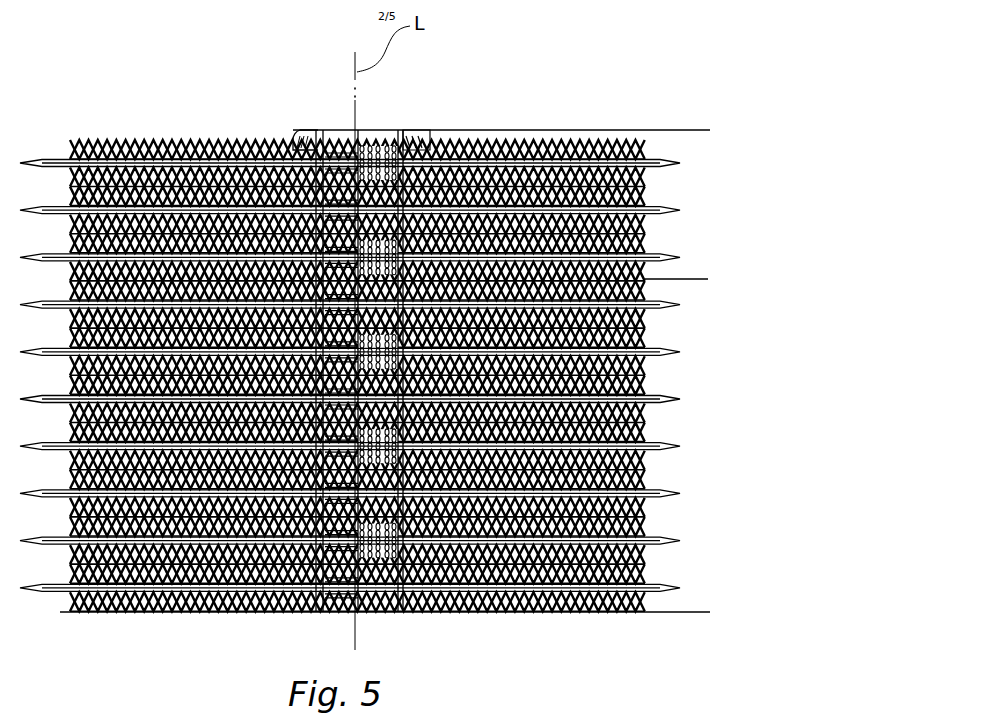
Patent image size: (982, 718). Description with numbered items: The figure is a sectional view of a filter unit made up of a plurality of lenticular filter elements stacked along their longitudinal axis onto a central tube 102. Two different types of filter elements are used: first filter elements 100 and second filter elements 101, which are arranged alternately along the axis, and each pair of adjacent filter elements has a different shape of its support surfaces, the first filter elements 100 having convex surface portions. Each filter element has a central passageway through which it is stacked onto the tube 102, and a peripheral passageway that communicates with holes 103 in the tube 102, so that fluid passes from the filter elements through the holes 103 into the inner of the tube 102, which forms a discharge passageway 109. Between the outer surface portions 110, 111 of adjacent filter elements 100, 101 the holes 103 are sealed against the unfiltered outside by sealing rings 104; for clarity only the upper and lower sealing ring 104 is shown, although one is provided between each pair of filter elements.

The first filter element 100 is at (690, 163).
The second filter element 101 is at (690, 210).
The tube 102 is at (380, 145).
The hole 103 is at (352, 112).
The sealing ring 104 is at (420, 140).
The discharge passageway 109 is at (340, 137).
The outer surface portion 110 is at (700, 130).
The outer surface portion 111 is at (660, 175).